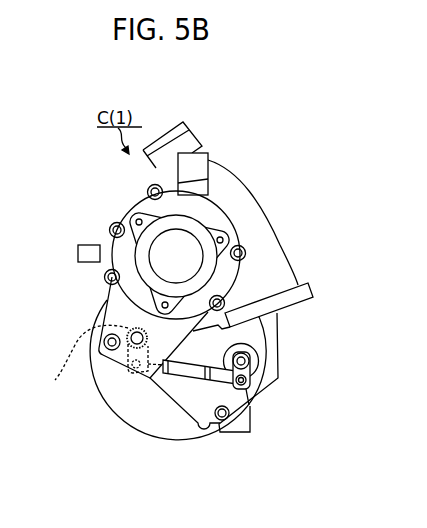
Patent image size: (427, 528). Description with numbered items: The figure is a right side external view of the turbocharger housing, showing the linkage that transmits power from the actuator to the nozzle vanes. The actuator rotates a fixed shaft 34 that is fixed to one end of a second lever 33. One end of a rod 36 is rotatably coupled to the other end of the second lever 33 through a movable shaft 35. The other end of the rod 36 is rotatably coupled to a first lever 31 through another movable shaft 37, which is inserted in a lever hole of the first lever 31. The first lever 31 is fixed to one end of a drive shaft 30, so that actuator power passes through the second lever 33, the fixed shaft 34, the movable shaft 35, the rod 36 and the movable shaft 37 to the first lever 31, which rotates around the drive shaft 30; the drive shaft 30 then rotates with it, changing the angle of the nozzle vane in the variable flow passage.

The drive shaft 30 is at (55, 380).
The first lever 31 is at (100, 354).
The second lever 33 is at (256, 380).
The fixed shaft 34 is at (268, 370).
The movable shaft 35 is at (252, 382).
The rod 36 is at (177, 384).
The movable shaft 37 is at (143, 373).